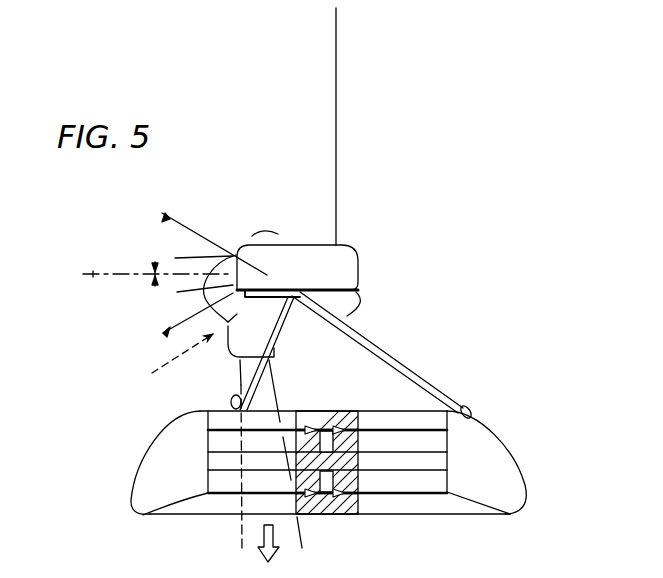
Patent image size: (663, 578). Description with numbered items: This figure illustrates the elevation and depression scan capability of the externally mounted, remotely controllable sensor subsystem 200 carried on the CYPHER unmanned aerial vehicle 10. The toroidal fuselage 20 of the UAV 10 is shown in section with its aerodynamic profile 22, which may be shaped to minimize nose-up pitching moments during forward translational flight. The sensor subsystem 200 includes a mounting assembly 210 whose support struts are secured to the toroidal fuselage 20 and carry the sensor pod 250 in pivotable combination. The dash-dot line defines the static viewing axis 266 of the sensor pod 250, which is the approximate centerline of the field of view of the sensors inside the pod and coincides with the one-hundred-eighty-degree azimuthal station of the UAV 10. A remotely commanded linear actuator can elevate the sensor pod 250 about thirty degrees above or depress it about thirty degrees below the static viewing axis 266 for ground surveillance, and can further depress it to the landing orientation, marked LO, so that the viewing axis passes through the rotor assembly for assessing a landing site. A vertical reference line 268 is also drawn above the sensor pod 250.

The unmanned aerial vehicle 10 is at (507, 267).
The toroidal fuselage 20 is at (481, 441).
The aerodynamic profile 22 is at (520, 468).
The sensor subsystem 200 is at (385, 150).
The mounting assembly 210 is at (390, 344).
The sensor pod 250 is at (377, 249).
The static viewing axis 266 is at (93, 276).
The vertical reference line 268 is at (334, 128).